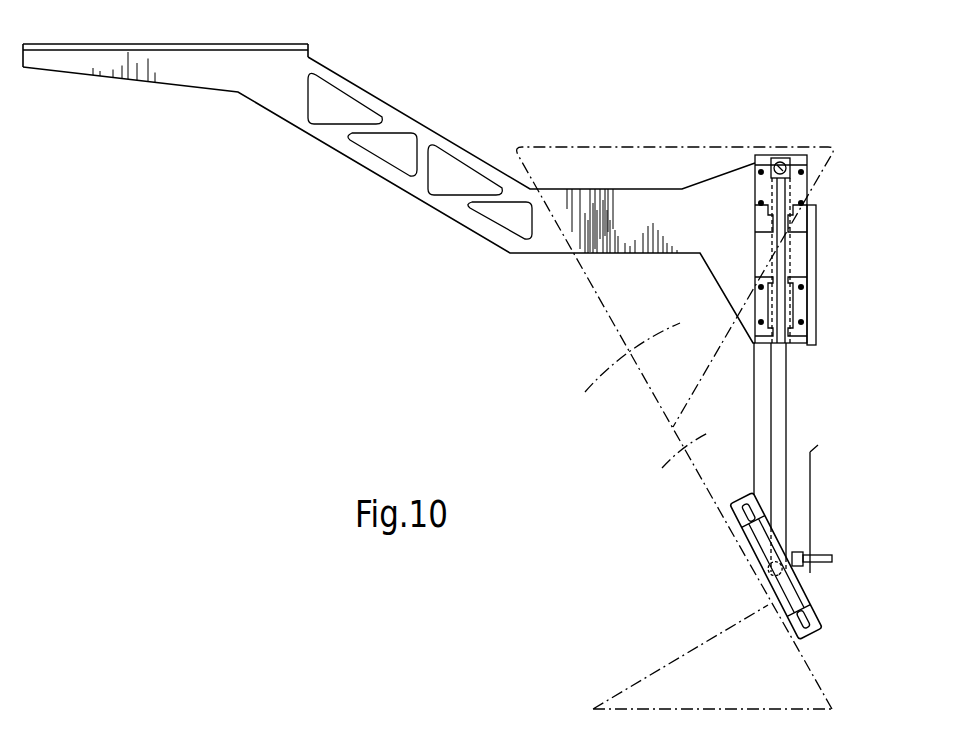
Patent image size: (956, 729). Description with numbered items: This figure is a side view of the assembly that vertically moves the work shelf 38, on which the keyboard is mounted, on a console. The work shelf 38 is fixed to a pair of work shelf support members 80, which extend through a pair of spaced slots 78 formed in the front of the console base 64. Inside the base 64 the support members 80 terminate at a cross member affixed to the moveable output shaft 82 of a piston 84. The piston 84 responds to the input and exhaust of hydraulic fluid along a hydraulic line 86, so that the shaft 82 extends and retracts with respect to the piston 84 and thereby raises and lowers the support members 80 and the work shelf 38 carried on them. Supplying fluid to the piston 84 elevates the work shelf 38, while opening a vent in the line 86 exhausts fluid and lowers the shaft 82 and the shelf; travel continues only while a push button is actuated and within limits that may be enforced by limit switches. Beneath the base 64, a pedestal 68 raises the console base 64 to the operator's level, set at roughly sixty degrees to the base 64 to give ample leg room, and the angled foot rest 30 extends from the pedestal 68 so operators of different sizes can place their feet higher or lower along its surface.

The work shelf 38 is at (178, 44).
The work shelf support member 80 is at (297, 127).
The slot 78 is at (567, 255).
The output shaft 82 is at (779, 265).
The piston 84 is at (790, 420).
The hydraulic line 86 is at (812, 565).
The base 64 is at (618, 366).
The pedestal 68 is at (670, 462).
The foot rest 30 is at (675, 662).